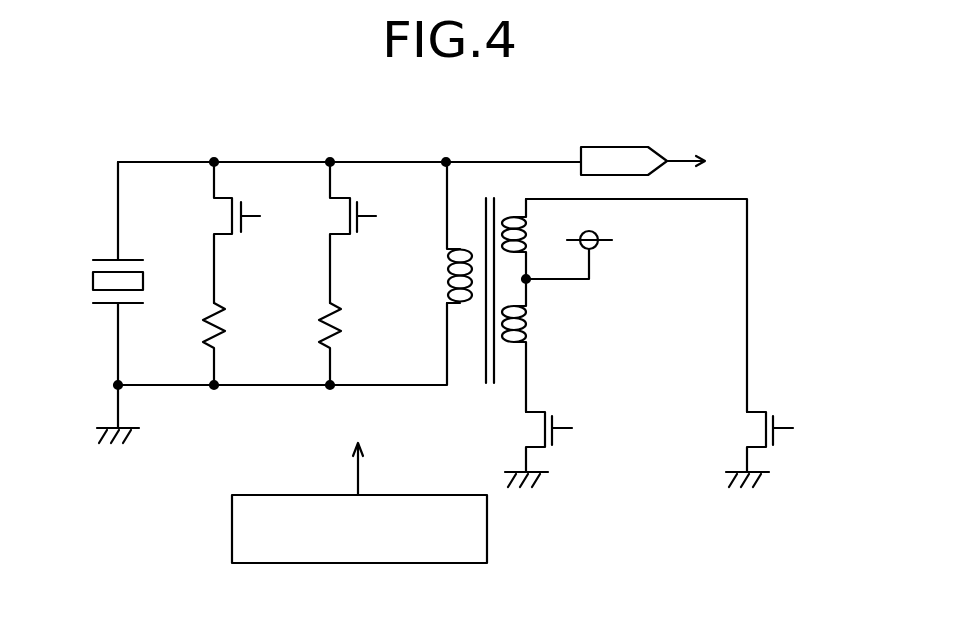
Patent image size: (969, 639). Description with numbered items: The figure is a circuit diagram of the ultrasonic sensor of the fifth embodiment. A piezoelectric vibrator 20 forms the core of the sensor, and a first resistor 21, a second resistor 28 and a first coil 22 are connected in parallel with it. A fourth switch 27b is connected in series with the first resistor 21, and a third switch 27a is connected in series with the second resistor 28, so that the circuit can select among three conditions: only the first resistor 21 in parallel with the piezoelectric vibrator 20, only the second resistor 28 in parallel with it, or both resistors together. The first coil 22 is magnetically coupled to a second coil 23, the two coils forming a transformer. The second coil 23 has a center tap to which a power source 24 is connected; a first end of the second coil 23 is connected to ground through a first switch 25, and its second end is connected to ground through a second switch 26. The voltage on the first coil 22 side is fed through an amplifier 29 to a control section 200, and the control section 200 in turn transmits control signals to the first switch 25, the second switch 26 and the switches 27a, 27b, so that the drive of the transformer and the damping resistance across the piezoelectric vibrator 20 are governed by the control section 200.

The piezoelectric vibrator 20 is at (108, 258).
The first resistor 21 is at (224, 318).
The first coil 22 is at (458, 248).
The second coil 23 is at (516, 212).
The power source 24 is at (599, 236).
The first switch 25 is at (556, 419).
The second switch 26 is at (776, 419).
The third switch 27a is at (359, 206).
The fourth switch 27b is at (242, 206).
The second resistor 28 is at (340, 319).
The amplifier 29 is at (603, 146).
The control section 200 is at (488, 540).